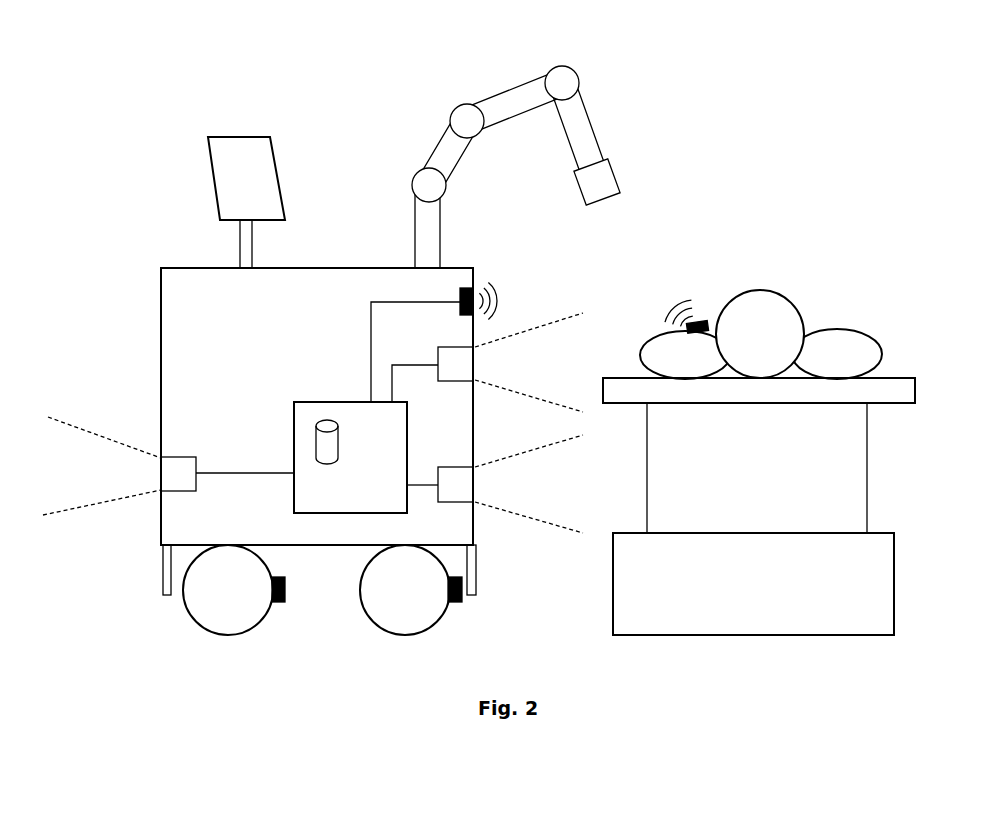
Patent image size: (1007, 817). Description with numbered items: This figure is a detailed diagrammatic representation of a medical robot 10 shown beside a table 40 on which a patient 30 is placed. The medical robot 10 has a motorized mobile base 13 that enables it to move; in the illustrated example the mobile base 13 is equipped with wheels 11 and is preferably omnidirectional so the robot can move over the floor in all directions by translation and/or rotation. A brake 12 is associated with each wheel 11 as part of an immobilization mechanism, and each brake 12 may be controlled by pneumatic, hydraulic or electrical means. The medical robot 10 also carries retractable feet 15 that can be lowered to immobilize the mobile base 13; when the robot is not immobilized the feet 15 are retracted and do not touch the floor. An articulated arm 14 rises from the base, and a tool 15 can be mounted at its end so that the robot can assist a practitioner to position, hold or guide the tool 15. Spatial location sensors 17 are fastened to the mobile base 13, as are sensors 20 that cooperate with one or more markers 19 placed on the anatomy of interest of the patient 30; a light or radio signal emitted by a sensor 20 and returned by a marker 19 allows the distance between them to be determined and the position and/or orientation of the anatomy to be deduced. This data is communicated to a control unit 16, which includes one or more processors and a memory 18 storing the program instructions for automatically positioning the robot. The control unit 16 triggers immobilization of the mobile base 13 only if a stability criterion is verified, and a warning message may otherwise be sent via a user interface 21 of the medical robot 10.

The medical robot 10 is at (157, 233).
The wheels 11 is at (213, 633).
The brake 12 is at (280, 604).
The mobile base 13 is at (170, 338).
The articulated arm 14 is at (490, 95).
The tool 15 is at (618, 175).
The control unit 16 is at (294, 490).
The spatial location sensors 17 is at (190, 460).
The memory 18 is at (336, 452).
The marker 19 is at (700, 320).
The sensors 20 is at (478, 287).
The user interface 21 is at (233, 145).
The patient 30 is at (832, 335).
The table 40 is at (905, 393).